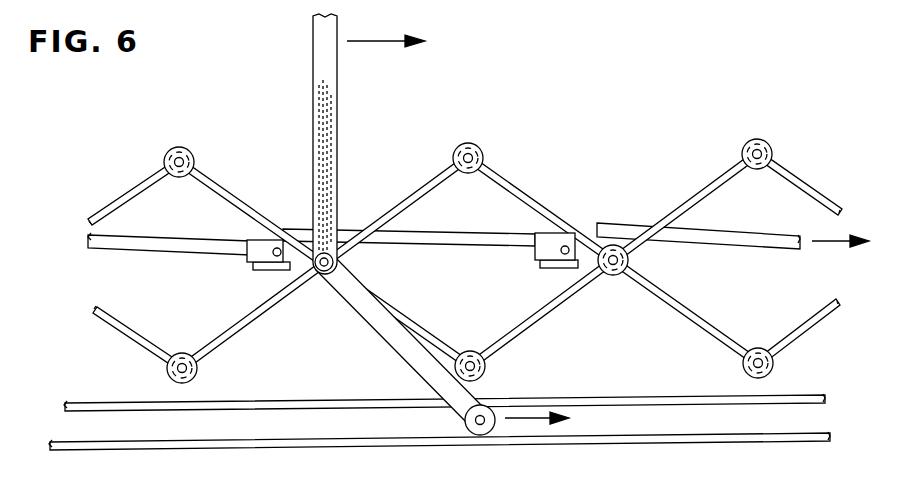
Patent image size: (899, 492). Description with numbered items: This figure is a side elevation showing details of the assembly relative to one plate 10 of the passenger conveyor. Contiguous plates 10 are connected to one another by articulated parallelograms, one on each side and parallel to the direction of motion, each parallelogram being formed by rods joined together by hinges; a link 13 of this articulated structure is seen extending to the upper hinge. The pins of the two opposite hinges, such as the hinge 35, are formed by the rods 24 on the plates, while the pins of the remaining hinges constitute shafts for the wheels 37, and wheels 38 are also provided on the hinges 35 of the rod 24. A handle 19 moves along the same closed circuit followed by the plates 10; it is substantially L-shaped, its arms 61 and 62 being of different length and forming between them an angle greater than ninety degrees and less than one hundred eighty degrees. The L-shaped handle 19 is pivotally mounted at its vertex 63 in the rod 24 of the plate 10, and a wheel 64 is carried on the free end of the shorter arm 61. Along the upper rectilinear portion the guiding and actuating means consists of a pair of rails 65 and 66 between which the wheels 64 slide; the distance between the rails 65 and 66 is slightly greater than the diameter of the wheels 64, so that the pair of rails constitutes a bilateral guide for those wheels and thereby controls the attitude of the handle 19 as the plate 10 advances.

The plate 10 is at (118, 252).
The scissor link 13 is at (420, 182).
The handle 19 is at (283, 144).
The rod 24 is at (322, 272).
The hinge 35 is at (336, 262).
The wheel 37 is at (468, 143).
The wheel 38 is at (612, 276).
The arm 61 is at (402, 352).
The arm 62 is at (322, 103).
The vertex 63 is at (298, 277).
The wheel 64 is at (492, 432).
The rail 65 is at (100, 403).
The rail 66 is at (146, 446).